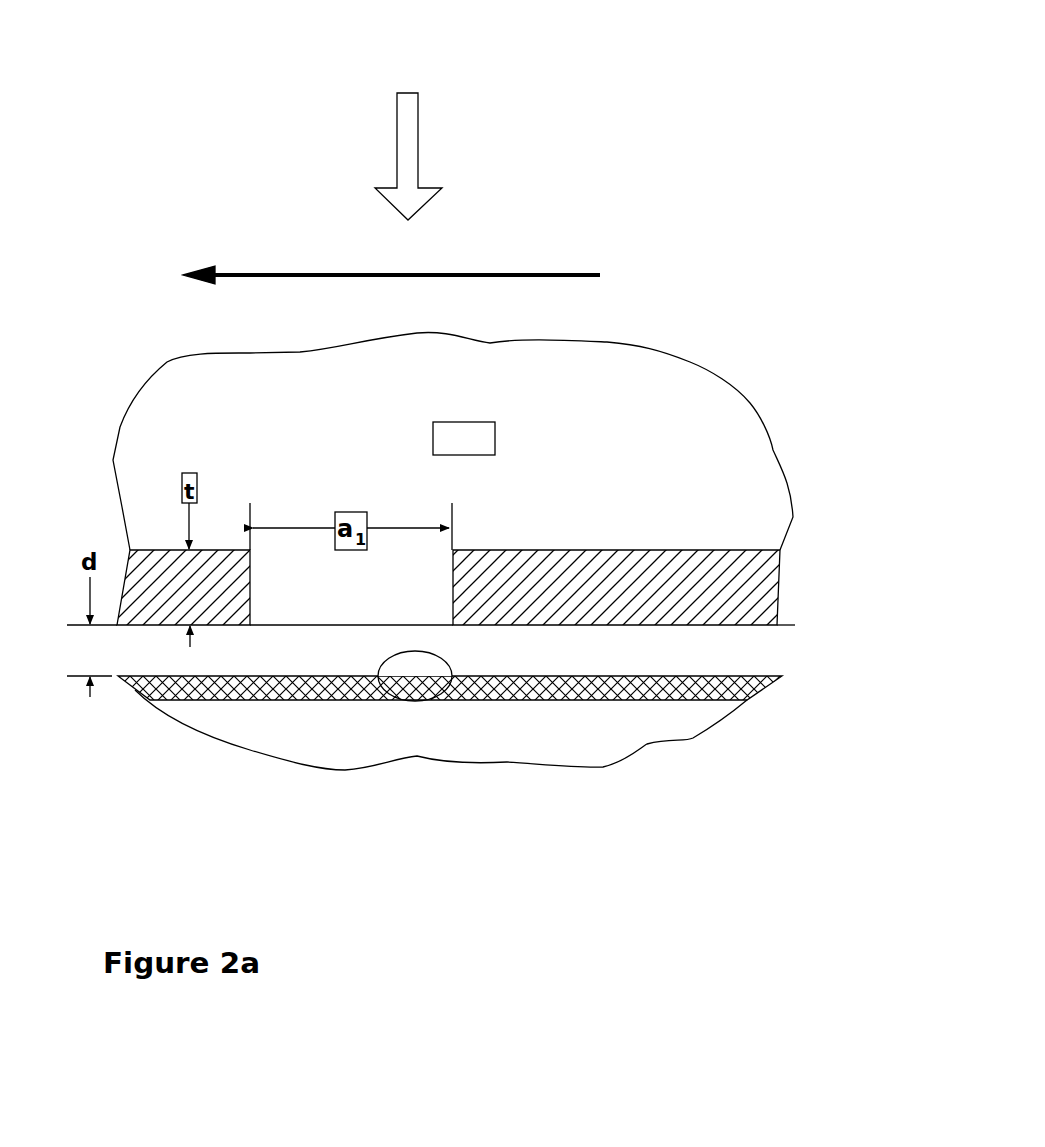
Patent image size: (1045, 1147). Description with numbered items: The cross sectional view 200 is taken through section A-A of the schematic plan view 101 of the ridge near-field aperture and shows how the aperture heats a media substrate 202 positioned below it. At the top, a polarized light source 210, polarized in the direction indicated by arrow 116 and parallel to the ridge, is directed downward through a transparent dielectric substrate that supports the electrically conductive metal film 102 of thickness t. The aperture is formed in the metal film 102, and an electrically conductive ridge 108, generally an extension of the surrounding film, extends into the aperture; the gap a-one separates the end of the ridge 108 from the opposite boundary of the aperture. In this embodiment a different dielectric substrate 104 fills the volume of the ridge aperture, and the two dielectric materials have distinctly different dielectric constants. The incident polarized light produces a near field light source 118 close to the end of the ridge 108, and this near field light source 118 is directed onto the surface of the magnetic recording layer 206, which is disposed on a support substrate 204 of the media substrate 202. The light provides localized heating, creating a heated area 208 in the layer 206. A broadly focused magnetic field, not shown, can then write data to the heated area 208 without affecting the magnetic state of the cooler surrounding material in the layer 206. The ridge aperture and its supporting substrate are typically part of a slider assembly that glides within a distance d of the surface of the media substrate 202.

The cross sectional view 200 is at (602, 47).
The polarized light source 210 is at (420, 93).
The arrow 116 is at (600, 275).
The schematic plan view 101 is at (453, 425).
The electrically conductive metal film 102 is at (200, 596).
The dielectric substrate 104 is at (374, 596).
The electrically conductive ridge 108 is at (488, 587).
The near-field light source 118 is at (450, 665).
The heated area 208 is at (377, 700).
The support substrate 204 is at (599, 740).
The magnetic recording layer 206 is at (140, 692).
The media substrate 202 is at (424, 729).